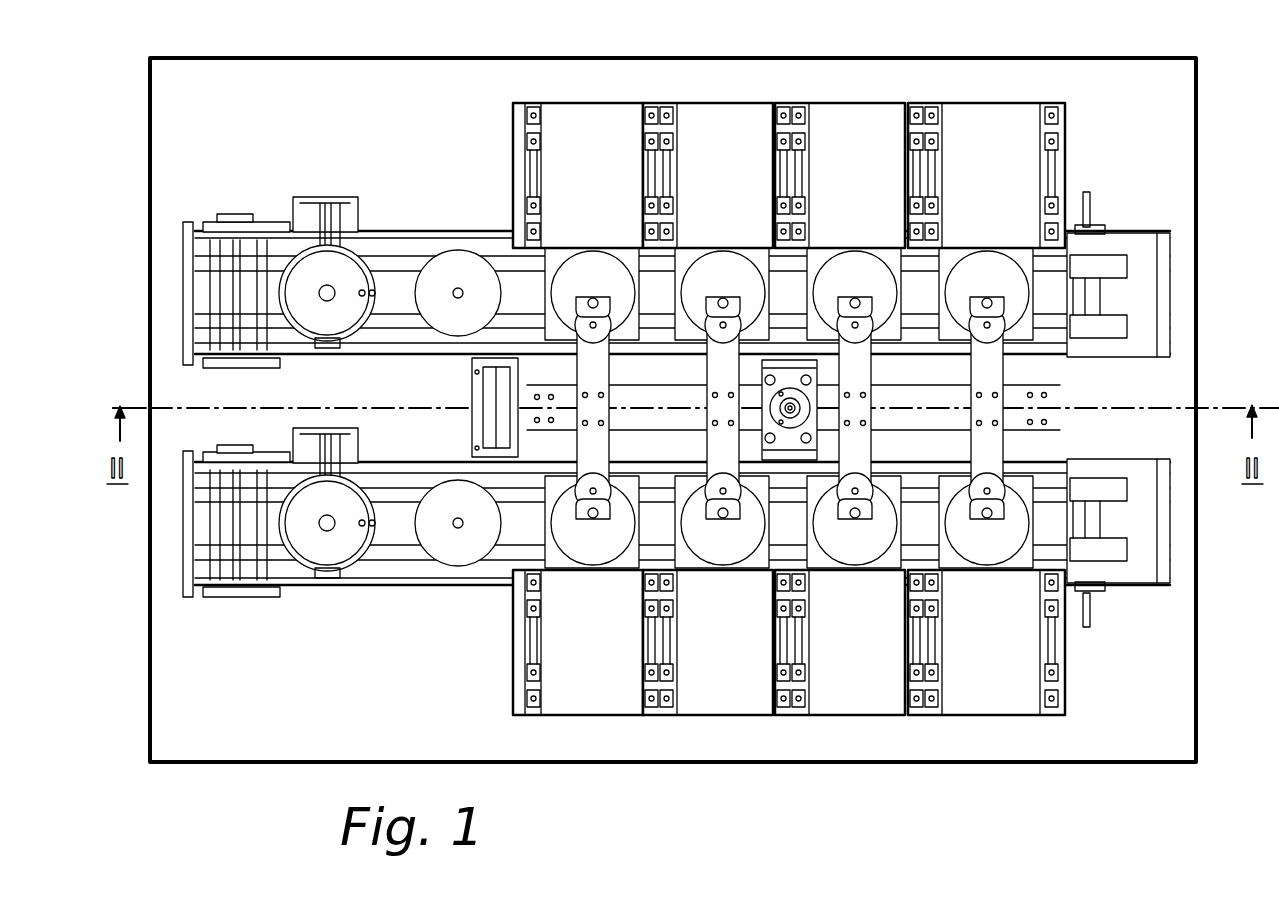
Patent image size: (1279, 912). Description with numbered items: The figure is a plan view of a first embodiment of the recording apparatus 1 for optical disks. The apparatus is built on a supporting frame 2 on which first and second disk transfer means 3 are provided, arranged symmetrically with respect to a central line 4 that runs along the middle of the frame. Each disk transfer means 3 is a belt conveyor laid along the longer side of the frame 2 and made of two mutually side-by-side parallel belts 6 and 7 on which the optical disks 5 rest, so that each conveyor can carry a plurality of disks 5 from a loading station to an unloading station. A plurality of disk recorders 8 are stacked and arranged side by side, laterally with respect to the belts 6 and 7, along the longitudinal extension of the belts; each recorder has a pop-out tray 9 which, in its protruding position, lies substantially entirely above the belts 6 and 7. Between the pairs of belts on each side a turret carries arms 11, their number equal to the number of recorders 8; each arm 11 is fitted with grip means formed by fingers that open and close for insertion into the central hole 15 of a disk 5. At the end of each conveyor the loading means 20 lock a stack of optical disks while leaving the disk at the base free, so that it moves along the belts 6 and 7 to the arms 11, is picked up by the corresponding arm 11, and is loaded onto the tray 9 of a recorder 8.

The recording apparatus 1 is at (380, 155).
The supporting frame 2 is at (276, 740).
The disk transfer means 3 is at (410, 222).
The central line 4 is at (182, 406).
The optical disk 5 is at (447, 552).
The belt 6 is at (396, 325).
The belt 7 is at (507, 262).
The disk recorder 8 is at (565, 127).
The pop-out tray 9 is at (757, 247).
The arm 11 is at (736, 362).
The central hole 15 is at (458, 290).
The loading means 20 is at (298, 240).